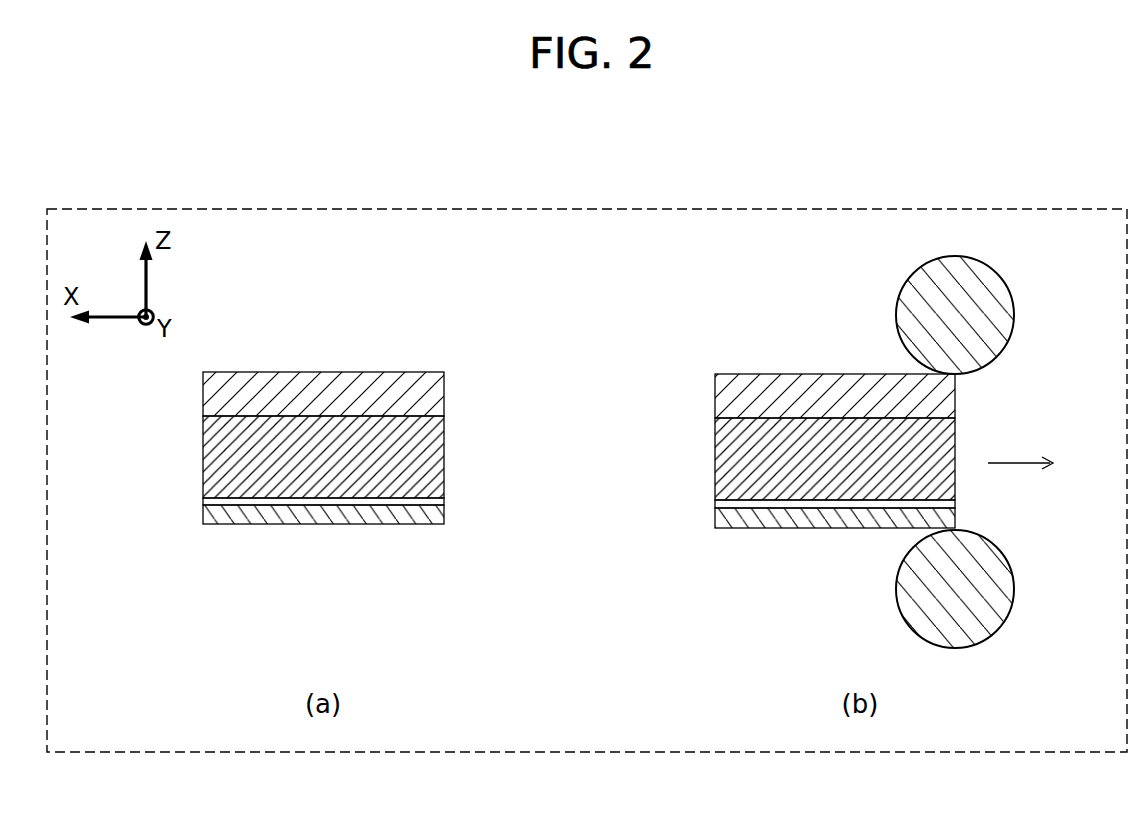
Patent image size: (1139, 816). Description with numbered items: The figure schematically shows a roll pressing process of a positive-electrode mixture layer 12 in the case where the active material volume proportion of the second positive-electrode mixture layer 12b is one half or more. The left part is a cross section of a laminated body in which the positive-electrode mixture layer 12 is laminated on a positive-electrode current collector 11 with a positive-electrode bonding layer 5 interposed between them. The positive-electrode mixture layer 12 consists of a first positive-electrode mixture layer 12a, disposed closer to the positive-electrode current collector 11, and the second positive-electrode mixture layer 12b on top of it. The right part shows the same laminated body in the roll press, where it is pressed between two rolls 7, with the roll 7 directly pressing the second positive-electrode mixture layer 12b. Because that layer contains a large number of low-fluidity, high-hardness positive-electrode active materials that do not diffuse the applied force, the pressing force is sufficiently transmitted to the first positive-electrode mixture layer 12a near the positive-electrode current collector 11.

The positive-electrode bonding layer 5 is at (444, 501).
The roll 7 is at (991, 327).
The positive-electrode current collector 11 is at (203, 512).
The positive-electrode mixture layer 12 is at (511, 436).
The first positive-electrode mixture layer 12a is at (203, 458).
The second positive-electrode mixture layer 12b is at (203, 391).